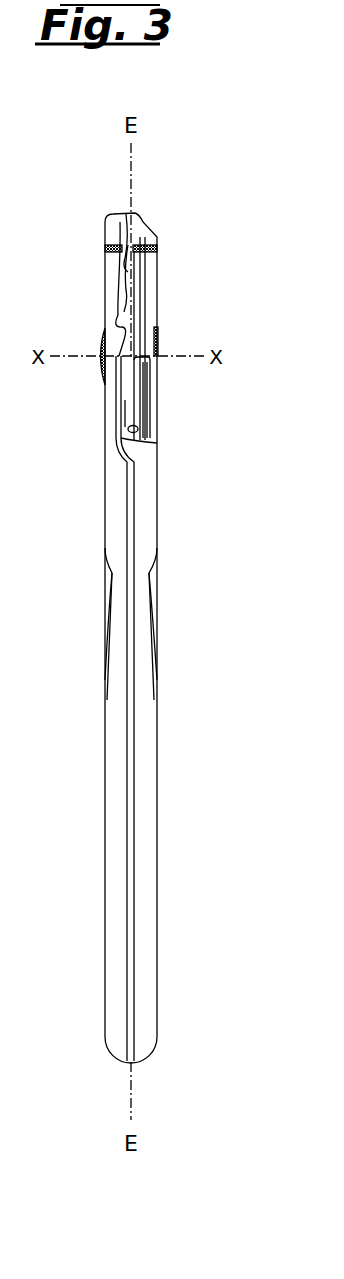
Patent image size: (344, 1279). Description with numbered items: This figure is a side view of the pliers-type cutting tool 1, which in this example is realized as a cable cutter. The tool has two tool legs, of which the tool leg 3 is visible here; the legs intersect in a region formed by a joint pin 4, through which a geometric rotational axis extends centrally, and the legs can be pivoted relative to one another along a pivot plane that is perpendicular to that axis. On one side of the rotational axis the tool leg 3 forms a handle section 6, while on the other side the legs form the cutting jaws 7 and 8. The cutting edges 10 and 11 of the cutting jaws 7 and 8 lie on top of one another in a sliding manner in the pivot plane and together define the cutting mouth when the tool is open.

The pliers-type cutting tool 1 is at (40, 219).
The tool leg 3 is at (142, 730).
The joint pin 4 is at (158, 344).
The handle section 6 is at (143, 950).
The cutting jaw 7 is at (113, 288).
The cutting jaw 8 is at (145, 285).
The cutting edge 10 is at (105, 248).
The cutting edge 11 is at (157, 248).